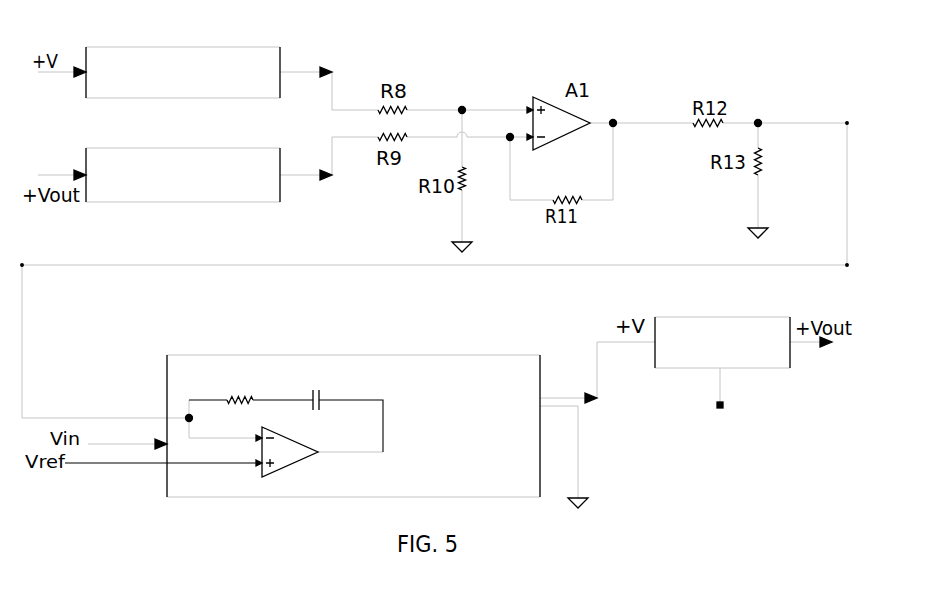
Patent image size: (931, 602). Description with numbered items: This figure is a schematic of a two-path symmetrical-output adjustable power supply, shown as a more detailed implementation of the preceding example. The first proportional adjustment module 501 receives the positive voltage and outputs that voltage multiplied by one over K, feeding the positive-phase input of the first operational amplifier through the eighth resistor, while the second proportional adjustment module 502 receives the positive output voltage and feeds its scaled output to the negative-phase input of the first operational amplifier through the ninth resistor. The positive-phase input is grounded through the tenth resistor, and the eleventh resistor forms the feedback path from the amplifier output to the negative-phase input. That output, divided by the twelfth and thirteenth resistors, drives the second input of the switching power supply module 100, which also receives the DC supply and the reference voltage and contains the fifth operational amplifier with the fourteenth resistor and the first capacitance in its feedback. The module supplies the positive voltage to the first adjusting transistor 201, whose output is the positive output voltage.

The first proportional adjustment module 501 is at (180, 47).
The second proportional adjustment module 502 is at (190, 148).
The switching power supply module 100 is at (372, 355).
The first adjusting transistor 201 is at (720, 317).